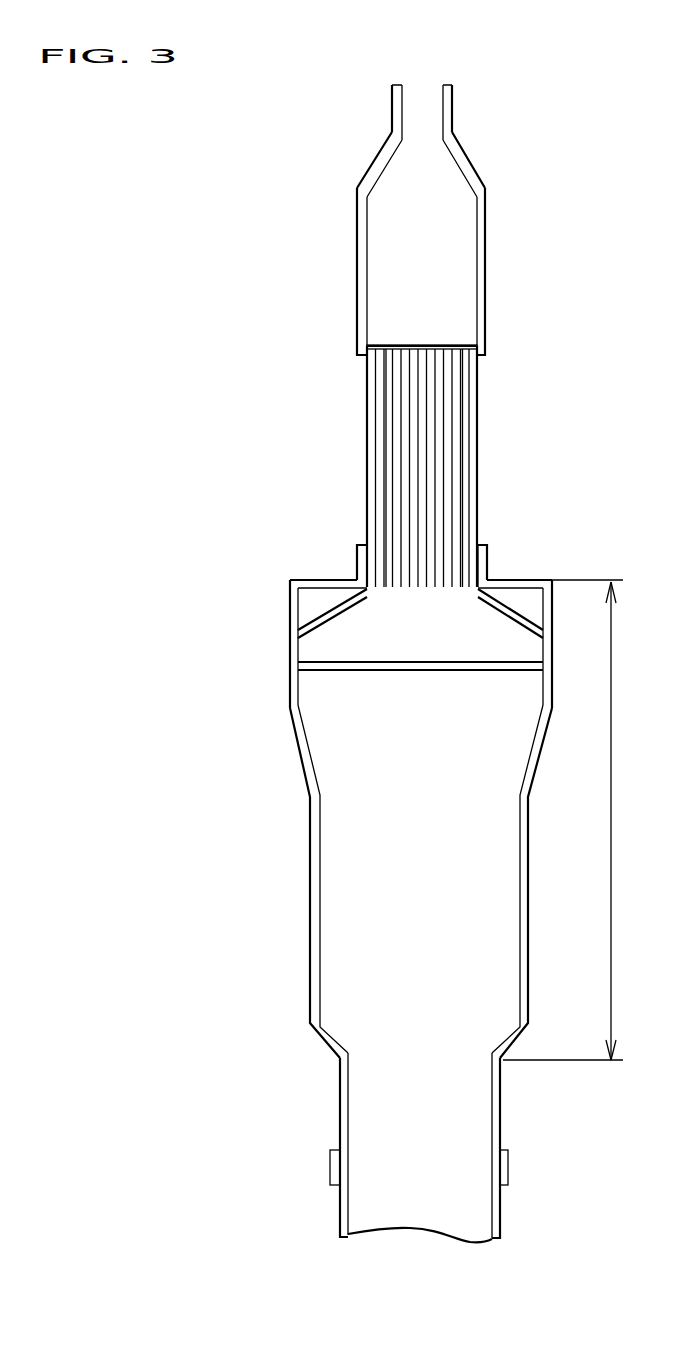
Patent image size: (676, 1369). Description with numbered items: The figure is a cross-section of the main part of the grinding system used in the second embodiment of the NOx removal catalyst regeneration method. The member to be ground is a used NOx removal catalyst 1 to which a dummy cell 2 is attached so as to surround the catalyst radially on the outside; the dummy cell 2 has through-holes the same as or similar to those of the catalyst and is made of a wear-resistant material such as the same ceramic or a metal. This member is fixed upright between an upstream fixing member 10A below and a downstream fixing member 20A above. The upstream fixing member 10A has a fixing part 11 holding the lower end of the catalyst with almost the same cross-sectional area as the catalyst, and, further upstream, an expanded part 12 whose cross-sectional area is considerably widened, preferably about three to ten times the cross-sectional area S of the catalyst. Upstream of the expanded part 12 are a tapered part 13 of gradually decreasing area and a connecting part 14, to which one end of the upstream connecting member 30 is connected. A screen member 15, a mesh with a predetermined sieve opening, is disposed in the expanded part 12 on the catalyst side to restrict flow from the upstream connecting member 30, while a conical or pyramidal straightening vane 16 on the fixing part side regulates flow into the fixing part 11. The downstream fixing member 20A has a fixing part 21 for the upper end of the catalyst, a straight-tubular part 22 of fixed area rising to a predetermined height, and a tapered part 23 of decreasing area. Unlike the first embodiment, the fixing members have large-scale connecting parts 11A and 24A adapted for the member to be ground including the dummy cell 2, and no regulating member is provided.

The NOx removal catalyst 1 is at (422, 342).
The dummy cell 2 is at (357, 338).
The upstream fixing member 10A is at (384, 867).
The fixing part 11 is at (355, 560).
The connecting part 11A is at (362, 570).
The expanded part 12 is at (573, 820).
The tapered part 13 is at (320, 1043).
The connecting part 14 is at (502, 1137).
The screen member 15 is at (294, 669).
The straightening vane 16 is at (290, 630).
The downstream fixing member 20A is at (457, 239).
The fixing part 21 is at (480, 365).
The straight-tubular part 22 is at (470, 300).
The tapered part 23 is at (463, 150).
The connecting part 24A is at (452, 103).
The upstream connecting member 30 is at (497, 1213).
The cross-sectional area S is at (515, 578).